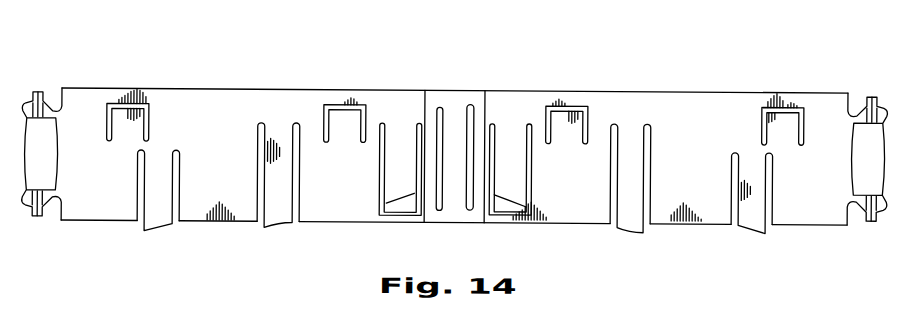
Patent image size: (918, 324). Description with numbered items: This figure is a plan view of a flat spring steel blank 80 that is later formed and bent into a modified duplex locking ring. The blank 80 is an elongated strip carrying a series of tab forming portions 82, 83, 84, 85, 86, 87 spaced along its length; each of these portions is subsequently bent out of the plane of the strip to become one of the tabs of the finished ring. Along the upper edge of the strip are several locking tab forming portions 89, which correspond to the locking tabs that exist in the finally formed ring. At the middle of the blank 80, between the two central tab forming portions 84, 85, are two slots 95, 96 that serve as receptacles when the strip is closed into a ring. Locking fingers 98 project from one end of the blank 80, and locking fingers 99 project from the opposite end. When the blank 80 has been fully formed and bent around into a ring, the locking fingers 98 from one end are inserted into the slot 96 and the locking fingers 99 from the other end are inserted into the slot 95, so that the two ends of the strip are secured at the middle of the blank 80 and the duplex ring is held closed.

The spring steel blank 80 is at (694, 82).
The tab forming portion 82 is at (158, 209).
The tab forming portion 83 is at (277, 209).
The tab forming portion 84 is at (400, 158).
The tab forming portion 85 is at (513, 182).
The tab forming portion 86 is at (627, 191).
The tab forming portion 87 is at (750, 199).
The locking tab forming portion 89 is at (132, 112).
The slot 95 is at (442, 104).
The slot 96 is at (472, 102).
The locking fingers 98 is at (37, 154).
The locking fingers 99 is at (874, 159).